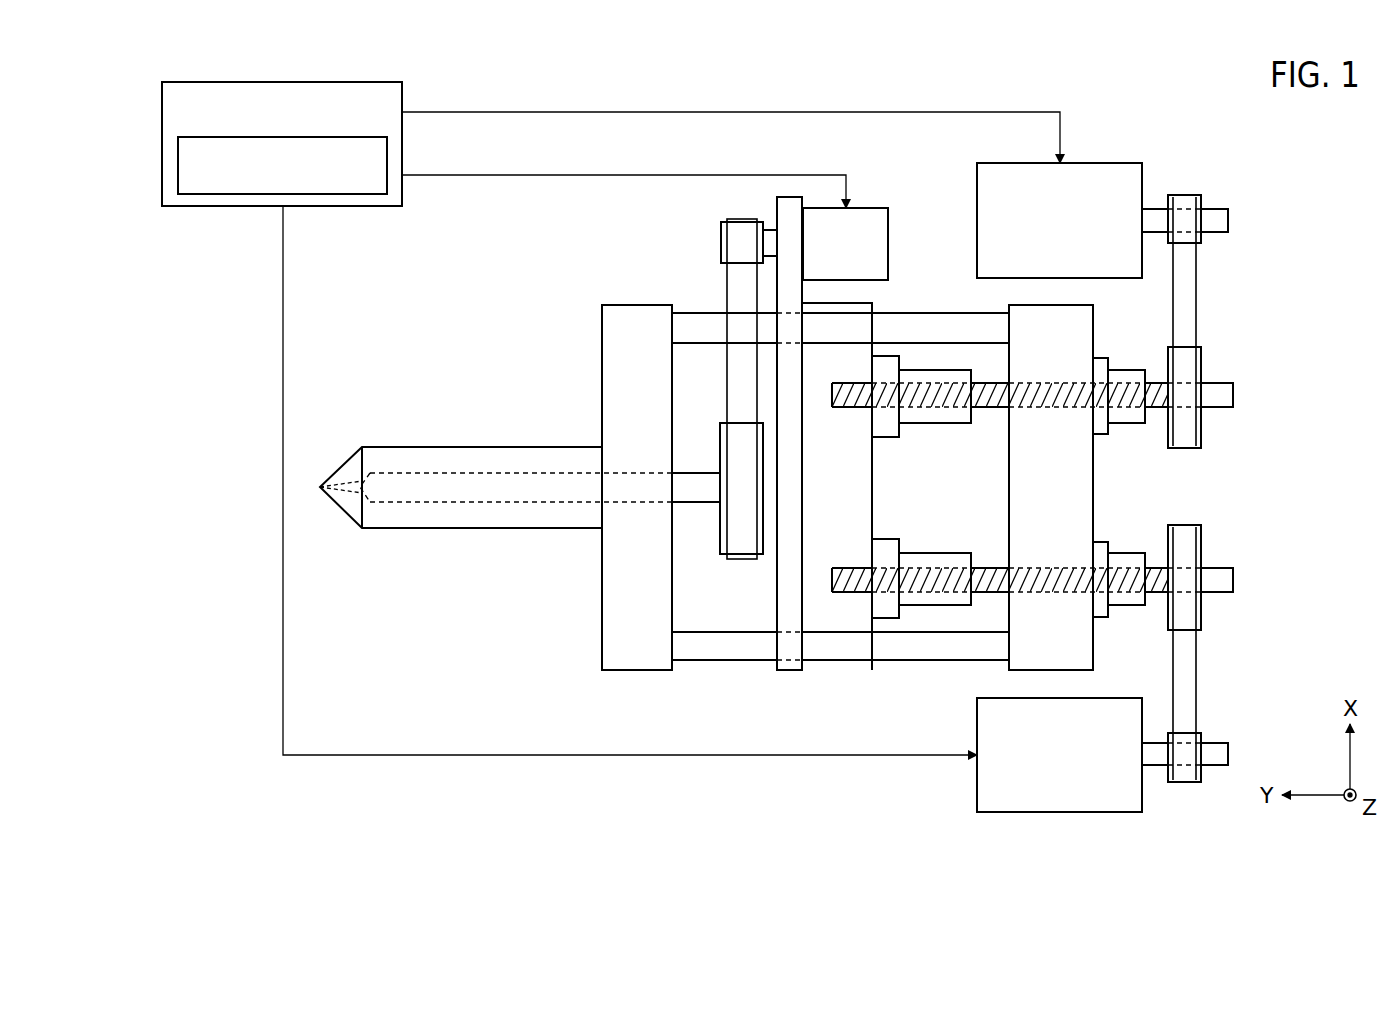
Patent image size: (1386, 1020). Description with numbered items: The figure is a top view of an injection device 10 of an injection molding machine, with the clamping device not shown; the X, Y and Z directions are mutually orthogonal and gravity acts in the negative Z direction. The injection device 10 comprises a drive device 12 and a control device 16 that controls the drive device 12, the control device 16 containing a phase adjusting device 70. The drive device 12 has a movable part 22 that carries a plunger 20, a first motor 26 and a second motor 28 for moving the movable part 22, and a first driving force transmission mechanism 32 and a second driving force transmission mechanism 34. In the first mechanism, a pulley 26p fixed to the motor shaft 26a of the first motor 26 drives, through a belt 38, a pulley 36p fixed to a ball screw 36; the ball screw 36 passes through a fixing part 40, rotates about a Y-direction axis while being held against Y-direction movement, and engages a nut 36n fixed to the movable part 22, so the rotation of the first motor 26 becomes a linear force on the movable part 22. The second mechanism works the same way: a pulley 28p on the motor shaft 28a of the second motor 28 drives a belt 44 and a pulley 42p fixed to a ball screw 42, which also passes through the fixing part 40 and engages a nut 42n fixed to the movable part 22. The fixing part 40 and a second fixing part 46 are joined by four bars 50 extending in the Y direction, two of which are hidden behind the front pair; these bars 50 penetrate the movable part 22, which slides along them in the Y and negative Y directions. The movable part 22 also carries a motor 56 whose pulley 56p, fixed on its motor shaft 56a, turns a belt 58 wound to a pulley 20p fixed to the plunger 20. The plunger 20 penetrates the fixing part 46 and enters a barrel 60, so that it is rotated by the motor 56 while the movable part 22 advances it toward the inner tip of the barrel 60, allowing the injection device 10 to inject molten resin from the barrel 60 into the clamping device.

The injection device 10 is at (1245, 95).
The drive device 12 is at (1088, 138).
The control device 16 is at (263, 82).
The plunger 20 is at (511, 477).
The pulley 20p is at (720, 543).
The movable part 22 is at (806, 672).
The first motor 26 is at (976, 721).
The motor shaft 26a is at (1225, 755).
The pulley 26p is at (1203, 737).
The second motor 28 is at (1007, 163).
The motor shaft 28a is at (1225, 220).
The pulley 28p is at (1203, 239).
The first driving force transmission mechanism 32 is at (1242, 642).
The second driving force transmission mechanism 34 is at (1242, 288).
The ball screw 36 is at (1228, 578).
The nut 36n is at (946, 553).
The pulley 36p is at (1203, 543).
The belt 38 is at (1188, 667).
The fixing part 40 is at (1084, 503).
The ball screw 42 is at (1228, 394).
The nut 42n is at (948, 425).
The pulley 42p is at (1203, 439).
The belt 44 is at (1188, 318).
The fixing part 46 is at (611, 618).
The bars 50 is at (700, 312).
The motor 56 is at (870, 208).
The motor shaft 56a is at (771, 230).
The pulley 56p is at (721, 243).
The belt 58 is at (733, 381).
The barrel 60 is at (444, 517).
The phase adjusting device 70 is at (360, 197).